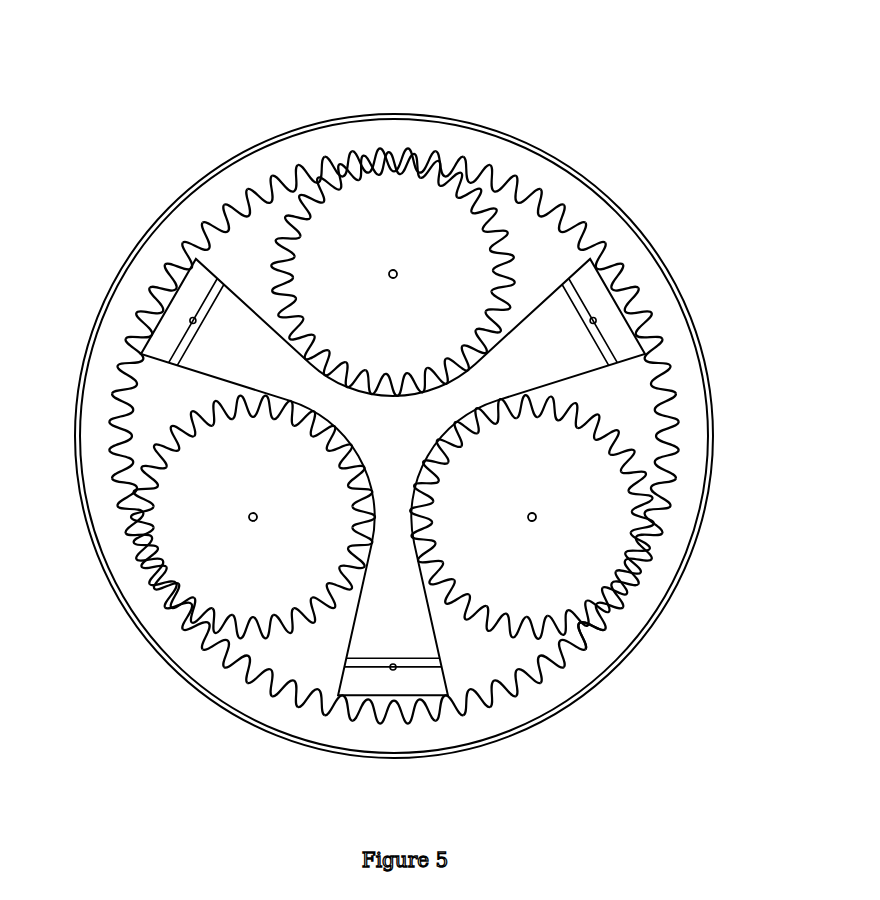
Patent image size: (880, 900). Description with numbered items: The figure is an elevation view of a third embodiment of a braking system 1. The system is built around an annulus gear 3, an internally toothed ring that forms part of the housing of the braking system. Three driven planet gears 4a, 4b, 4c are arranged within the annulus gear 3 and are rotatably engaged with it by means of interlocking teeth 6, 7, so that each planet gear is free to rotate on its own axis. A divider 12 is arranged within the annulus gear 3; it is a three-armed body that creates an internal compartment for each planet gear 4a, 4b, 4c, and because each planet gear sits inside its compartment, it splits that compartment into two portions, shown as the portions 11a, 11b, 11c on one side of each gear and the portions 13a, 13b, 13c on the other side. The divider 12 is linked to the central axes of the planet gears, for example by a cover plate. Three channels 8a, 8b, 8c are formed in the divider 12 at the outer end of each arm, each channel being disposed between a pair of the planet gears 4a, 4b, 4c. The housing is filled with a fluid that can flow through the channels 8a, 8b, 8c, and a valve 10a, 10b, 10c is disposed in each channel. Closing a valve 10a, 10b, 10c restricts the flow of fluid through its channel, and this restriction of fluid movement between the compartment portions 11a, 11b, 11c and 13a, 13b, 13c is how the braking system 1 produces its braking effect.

The braking system 1 is at (505, 103).
The annulus gear 3 is at (627, 237).
The planet gear 4a is at (365, 225).
The planet gear 4b is at (595, 448).
The planet gear 4c is at (243, 558).
The interlocking teeth 6 is at (627, 580).
The interlocking teeth 7 is at (583, 643).
The channel 8a is at (178, 340).
The channel 8b is at (578, 288).
The channel 8c is at (415, 673).
The valve 10a is at (190, 319).
The valve 10b is at (596, 319).
The valve 10c is at (393, 670).
The compartment portion 11a is at (270, 223).
The compartment portion 11b is at (643, 438).
The compartment portion 11c is at (263, 655).
The divider 12 is at (203, 282).
The compartment portion 13a is at (540, 238).
The compartment portion 13b is at (480, 653).
The compartment portion 13c is at (157, 400).